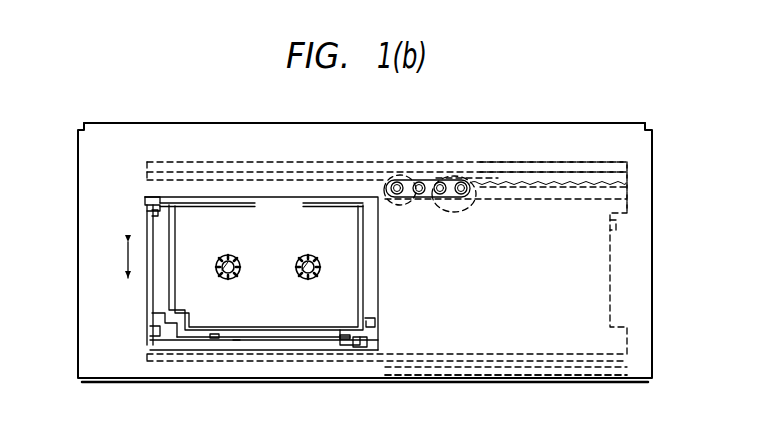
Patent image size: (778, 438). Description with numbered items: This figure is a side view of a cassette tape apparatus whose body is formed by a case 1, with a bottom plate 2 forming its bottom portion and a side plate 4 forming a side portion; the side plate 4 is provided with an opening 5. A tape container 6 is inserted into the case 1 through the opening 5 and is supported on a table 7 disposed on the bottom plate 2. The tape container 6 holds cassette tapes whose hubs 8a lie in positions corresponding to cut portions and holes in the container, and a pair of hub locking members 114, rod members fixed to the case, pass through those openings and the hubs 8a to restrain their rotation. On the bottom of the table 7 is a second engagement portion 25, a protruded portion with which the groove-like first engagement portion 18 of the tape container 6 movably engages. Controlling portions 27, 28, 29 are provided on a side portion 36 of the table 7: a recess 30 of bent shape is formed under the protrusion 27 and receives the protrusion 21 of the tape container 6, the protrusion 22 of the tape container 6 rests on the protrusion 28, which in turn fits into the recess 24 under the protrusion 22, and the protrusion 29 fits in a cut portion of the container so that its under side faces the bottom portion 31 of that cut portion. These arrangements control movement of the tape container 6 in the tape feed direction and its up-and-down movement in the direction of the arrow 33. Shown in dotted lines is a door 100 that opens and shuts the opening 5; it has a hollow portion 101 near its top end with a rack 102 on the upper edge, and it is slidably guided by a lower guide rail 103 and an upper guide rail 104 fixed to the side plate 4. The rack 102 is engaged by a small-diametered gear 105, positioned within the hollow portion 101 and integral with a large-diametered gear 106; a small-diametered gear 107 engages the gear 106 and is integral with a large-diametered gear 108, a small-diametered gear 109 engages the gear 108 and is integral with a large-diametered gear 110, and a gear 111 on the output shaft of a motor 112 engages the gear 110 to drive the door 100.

The case 1 is at (76, 162).
The bottom plate 2 is at (254, 351).
The side plate 4 is at (132, 123).
The opening 5 is at (282, 197).
The tape container 6 is at (216, 339).
The table 7 is at (237, 342).
The hub 8a is at (236, 259).
The first engagement portion 18 is at (332, 341).
The protrusion 21 is at (150, 213).
The protrusion 22 is at (152, 313).
The recess 24 is at (158, 323).
The second engagement portion 25 is at (346, 341).
The controlling portion 27 is at (150, 197).
The controlling portion 28 is at (149, 330).
The controlling portion 29 is at (366, 347).
The recess 30 is at (146, 207).
The bottom portion 31 is at (376, 322).
The arrow 33 is at (127, 262).
The side portion 36 is at (147, 228).
The door 100 is at (493, 349).
The hollow portion 101 is at (545, 183).
The rack 102 is at (536, 172).
The lower guide rail 103 is at (602, 367).
The upper guide rail 104 is at (597, 162).
The small-diametered gear 105 is at (399, 181).
The large-diametered gear 106 is at (386, 188).
The small-diametered gear 107 is at (421, 181).
The large-diametered gear 108 is at (414, 178).
The small-diametered gear 109 is at (442, 181).
The large-diametered gear 110 is at (444, 178).
The gear 111 is at (465, 181).
The motor 112 is at (466, 180).
The hub locking member 114 is at (226, 257).